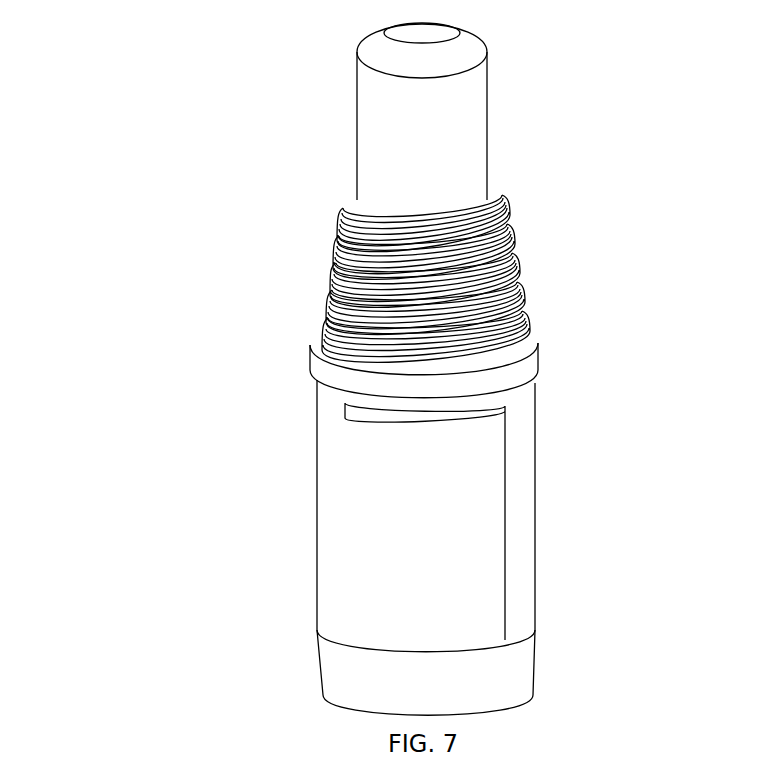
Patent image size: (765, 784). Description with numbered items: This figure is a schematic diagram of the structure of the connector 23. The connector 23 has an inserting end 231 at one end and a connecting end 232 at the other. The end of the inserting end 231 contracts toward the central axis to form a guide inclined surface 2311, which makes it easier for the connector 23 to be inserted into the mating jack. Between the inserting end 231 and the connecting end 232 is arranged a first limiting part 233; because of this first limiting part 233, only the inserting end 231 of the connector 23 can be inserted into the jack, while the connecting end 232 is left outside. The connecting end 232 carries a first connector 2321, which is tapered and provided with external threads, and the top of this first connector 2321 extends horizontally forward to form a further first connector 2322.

The connector 23 is at (364, 369).
The inserting end 231 is at (334, 547).
The guide inclined surface 2311 is at (340, 681).
The connecting end 232 is at (427, 192).
The first connector 2321 is at (505, 265).
The first connector 2322 is at (478, 138).
The first limiting part 233 is at (538, 360).